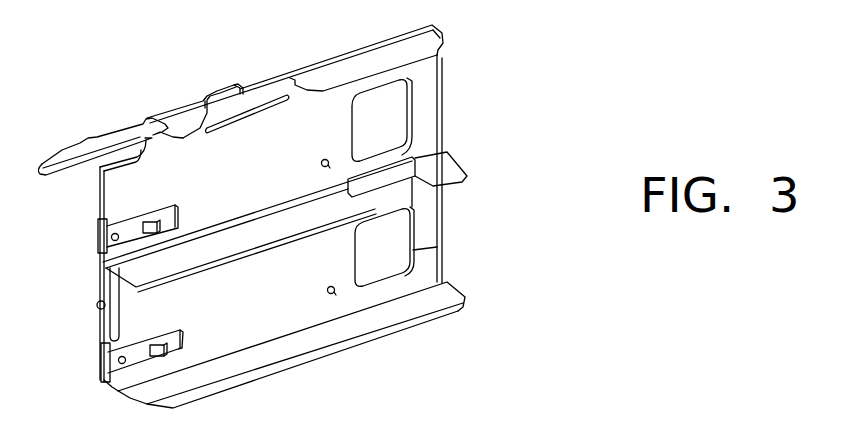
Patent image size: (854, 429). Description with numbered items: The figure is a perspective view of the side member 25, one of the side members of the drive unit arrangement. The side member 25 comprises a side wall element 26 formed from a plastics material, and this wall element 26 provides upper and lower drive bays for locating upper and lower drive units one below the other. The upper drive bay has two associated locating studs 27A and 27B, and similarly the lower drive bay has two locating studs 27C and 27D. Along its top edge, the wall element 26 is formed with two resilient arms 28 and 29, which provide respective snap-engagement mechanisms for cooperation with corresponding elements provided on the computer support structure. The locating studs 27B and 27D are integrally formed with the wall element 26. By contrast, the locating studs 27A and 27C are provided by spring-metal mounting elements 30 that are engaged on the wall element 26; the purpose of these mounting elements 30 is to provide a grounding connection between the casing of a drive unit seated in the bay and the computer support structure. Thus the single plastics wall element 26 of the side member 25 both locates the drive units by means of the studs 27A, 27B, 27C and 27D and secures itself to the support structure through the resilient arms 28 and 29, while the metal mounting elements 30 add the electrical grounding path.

The side member 25 is at (475, 94).
The side wall element 26 is at (248, 202).
The locating stud 27A is at (118, 234).
The locating stud 27B is at (319, 164).
The locating stud 27C is at (124, 357).
The locating stud 27D is at (327, 288).
The resilient arm 28 is at (228, 98).
The resilient arm 29 is at (84, 150).
The spring-metal mounting element 30 is at (98, 240).